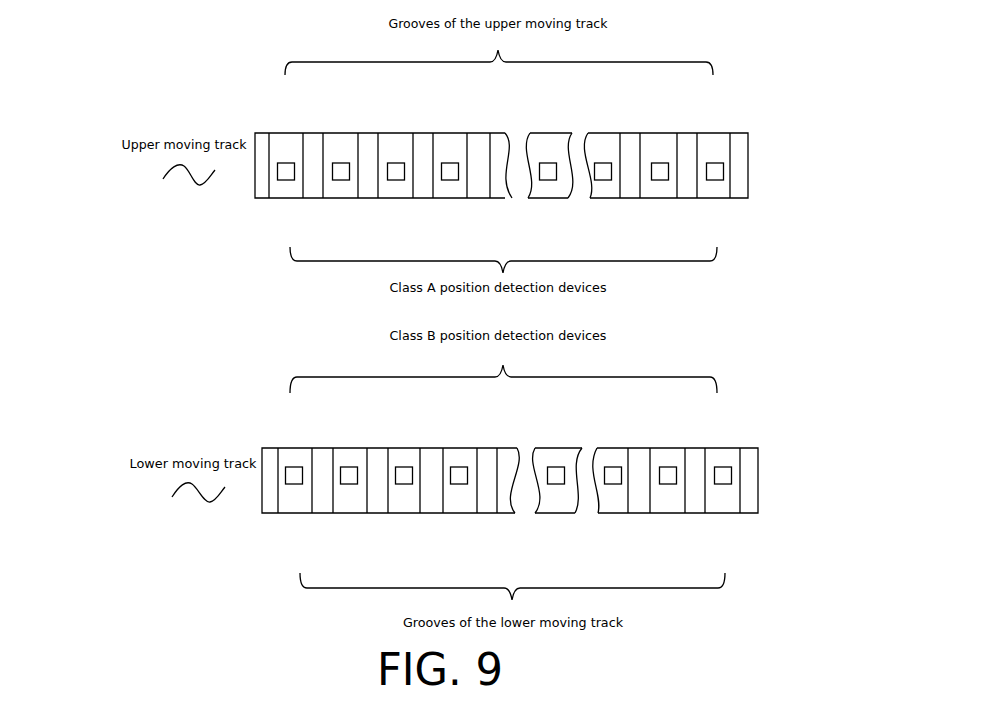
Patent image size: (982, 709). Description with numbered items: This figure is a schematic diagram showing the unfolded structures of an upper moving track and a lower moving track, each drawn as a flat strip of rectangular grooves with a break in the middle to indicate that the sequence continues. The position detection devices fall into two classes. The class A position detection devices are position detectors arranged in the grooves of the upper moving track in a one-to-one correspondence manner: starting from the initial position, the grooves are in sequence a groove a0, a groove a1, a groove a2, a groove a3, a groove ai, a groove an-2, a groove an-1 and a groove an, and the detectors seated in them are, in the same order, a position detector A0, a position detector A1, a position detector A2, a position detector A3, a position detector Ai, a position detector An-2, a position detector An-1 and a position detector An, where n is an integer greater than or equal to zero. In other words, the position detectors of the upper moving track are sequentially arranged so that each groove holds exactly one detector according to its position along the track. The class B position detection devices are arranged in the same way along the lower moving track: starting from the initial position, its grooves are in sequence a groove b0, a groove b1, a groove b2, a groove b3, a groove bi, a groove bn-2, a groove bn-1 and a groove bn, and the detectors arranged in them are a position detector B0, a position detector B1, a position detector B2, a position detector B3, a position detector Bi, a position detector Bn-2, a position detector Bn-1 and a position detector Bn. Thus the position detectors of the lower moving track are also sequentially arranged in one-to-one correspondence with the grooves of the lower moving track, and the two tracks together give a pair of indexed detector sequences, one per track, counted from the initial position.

The groove a0 is at (286, 163).
The groove a1 is at (341, 163).
The groove a2 is at (396, 163).
The groove a3 is at (450, 163).
The groove ai is at (548, 163).
The groove an-2 is at (603, 163).
The groove an-1 is at (660, 163).
The groove an is at (715, 163).
The position detector A0 is at (286, 180).
The position detector A1 is at (341, 180).
The position detector A2 is at (396, 180).
The position detector A3 is at (450, 180).
The position detector Ai is at (548, 180).
The position detector An-2 is at (603, 180).
The position detector An-1 is at (660, 180).
The position detector An is at (715, 180).
The position detector B0 is at (294, 467).
The position detector B1 is at (349, 467).
The position detector B2 is at (404, 467).
The position detector B3 is at (459, 467).
The position detector Bi is at (556, 467).
The position detector Bn-2 is at (613, 467).
The position detector Bn-1 is at (668, 467).
The position detector Bn is at (723, 467).
The groove b0 is at (294, 483).
The groove b1 is at (349, 483).
The groove b2 is at (404, 483).
The groove b3 is at (459, 483).
The groove bi is at (556, 483).
The groove bn-2 is at (613, 483).
The groove bn-1 is at (668, 483).
The groove bn is at (723, 483).